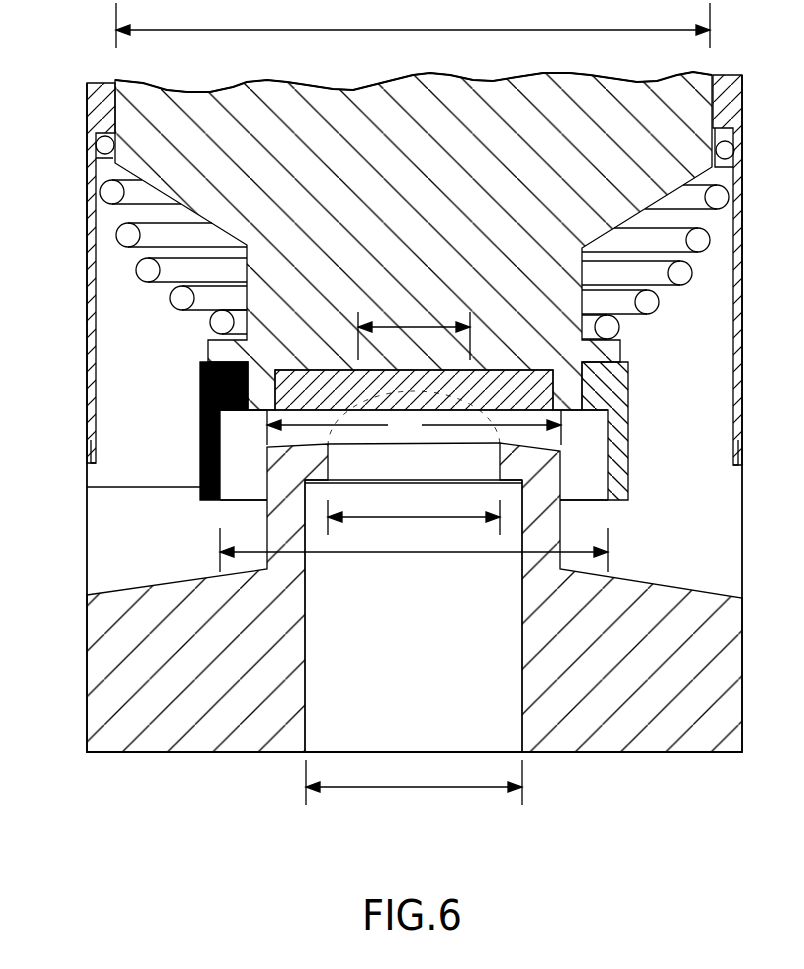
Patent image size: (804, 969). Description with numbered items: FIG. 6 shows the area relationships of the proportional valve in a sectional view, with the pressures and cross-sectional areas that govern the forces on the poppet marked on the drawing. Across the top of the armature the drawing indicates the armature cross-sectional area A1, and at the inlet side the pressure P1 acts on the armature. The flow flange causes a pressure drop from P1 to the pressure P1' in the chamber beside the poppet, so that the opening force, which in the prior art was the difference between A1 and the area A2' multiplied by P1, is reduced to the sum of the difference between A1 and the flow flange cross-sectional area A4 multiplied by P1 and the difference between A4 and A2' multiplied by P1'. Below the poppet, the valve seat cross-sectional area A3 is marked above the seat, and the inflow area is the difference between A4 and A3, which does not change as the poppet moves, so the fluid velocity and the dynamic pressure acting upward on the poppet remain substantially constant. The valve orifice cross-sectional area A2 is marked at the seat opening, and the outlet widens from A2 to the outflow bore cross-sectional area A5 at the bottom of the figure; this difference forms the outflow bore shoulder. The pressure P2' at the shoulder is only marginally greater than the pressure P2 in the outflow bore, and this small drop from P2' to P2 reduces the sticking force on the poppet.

The armature cross-sectional area A1 is at (413, 25).
The valve orifice cross-sectional area A2 is at (414, 513).
The area term in the opening force formula A2' is at (414, 326).
The valve seat cross-sectional area A3 is at (414, 427).
The flow flange cross-sectional area A4 is at (414, 548).
The outflow bore cross-sectional area A5 is at (414, 781).
The pressure P1 is at (132, 507).
The pressure P1' is at (197, 455).
The pressure P2 is at (377, 650).
The pressure P2' is at (579, 506).